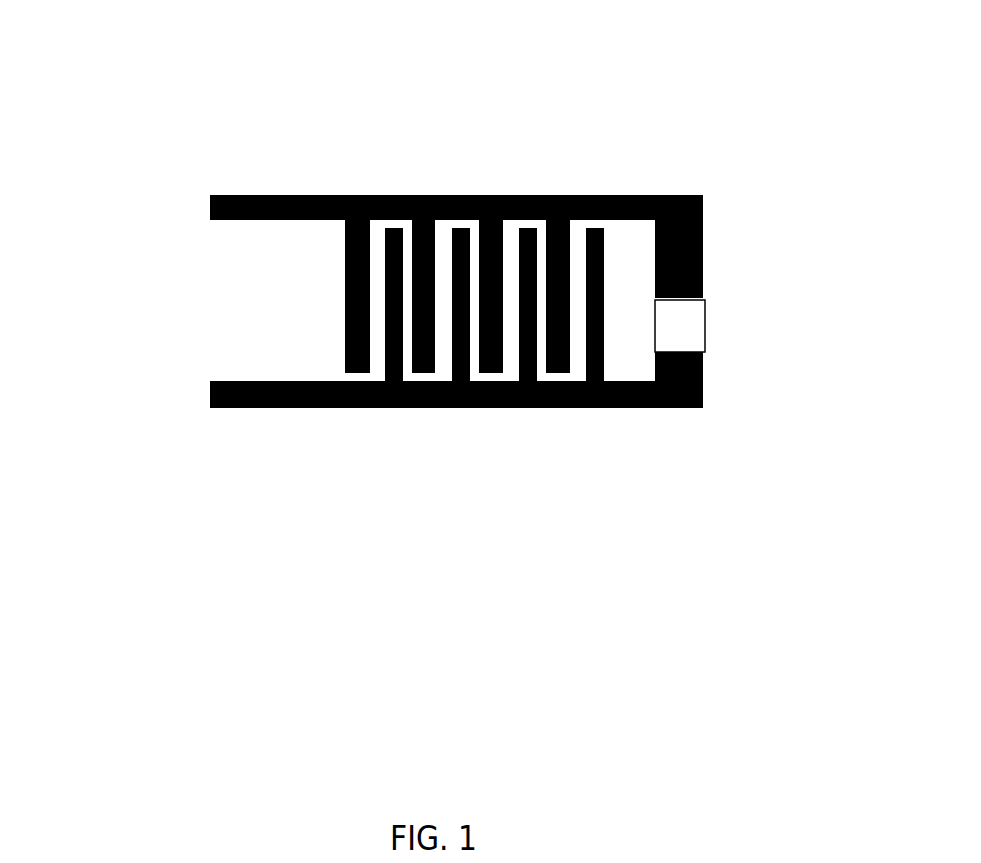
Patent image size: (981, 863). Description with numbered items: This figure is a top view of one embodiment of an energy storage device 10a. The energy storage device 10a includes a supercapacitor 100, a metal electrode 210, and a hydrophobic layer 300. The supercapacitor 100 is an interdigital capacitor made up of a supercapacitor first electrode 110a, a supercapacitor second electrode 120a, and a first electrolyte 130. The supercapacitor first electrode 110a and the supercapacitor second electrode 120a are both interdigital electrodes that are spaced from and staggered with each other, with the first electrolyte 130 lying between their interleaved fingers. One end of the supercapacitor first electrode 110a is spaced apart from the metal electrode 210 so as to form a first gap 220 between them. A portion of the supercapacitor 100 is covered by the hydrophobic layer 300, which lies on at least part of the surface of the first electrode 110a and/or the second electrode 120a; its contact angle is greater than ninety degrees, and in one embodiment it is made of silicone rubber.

The energy storage device 10a is at (702, 62).
The supercapacitor 100 is at (120, 142).
The supercapacitor first electrode 110a is at (327, 195).
The supercapacitor second electrode 120a is at (343, 408).
The first electrolyte 130 is at (380, 322).
The metal electrode 210 is at (693, 344).
The first gap 220 is at (693, 299).
The hydrophobic layer 300 is at (620, 248).